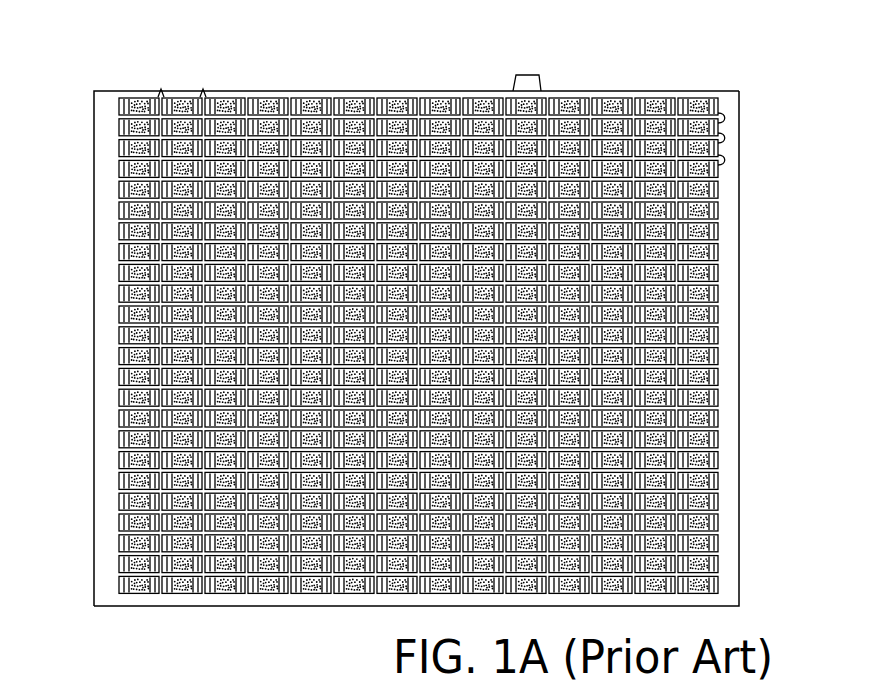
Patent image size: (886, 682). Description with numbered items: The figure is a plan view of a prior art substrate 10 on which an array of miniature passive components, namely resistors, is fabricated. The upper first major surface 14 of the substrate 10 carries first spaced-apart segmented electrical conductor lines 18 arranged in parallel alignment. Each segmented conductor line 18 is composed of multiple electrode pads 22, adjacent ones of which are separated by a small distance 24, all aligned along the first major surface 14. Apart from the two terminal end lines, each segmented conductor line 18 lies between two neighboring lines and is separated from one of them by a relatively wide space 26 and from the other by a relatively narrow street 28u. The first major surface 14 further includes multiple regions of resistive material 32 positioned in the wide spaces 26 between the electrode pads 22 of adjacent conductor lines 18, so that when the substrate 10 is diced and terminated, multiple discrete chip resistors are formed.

The substrate 10 is at (102, 220).
The first major surface 14 is at (728, 562).
The first spaced-apart segmented electrical conductor lines 18 is at (371, 100).
The electrode pads 22 is at (670, 98).
The small distance 24 is at (725, 118).
The relatively wide space 26 is at (527, 75).
The street 28u is at (203, 92).
The regions of resistive material 32 is at (482, 102).